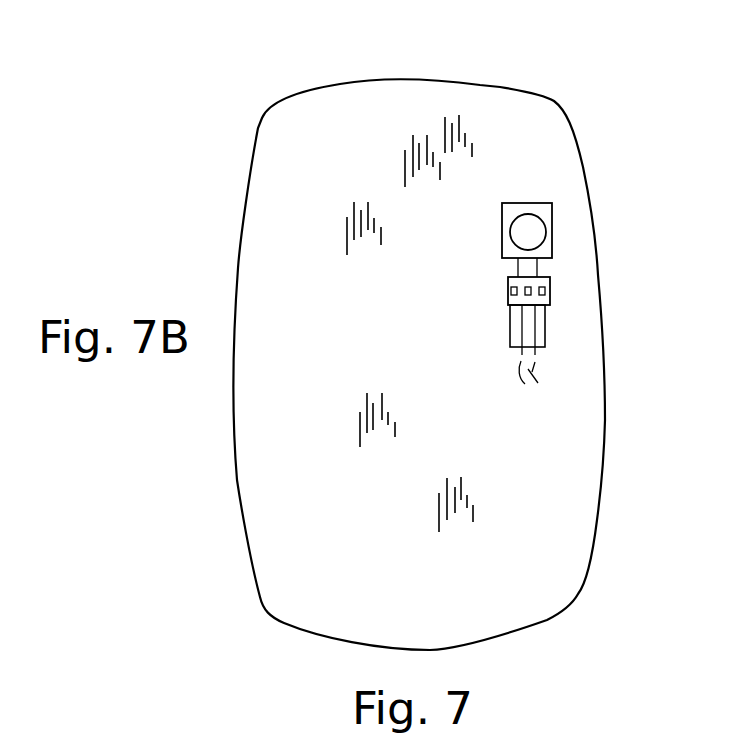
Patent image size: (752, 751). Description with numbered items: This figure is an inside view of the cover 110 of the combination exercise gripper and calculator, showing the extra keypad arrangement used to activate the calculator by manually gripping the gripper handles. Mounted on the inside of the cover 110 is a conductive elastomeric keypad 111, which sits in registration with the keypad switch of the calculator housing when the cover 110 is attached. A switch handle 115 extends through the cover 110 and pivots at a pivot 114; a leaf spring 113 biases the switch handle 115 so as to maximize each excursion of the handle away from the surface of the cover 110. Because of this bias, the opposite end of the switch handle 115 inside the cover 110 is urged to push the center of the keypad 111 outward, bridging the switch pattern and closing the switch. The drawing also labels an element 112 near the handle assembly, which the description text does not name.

The pad body 110 is at (497, 86).
The sensor unit 111 is at (545, 208).
The connector 114 is at (553, 290).
The plug 113 is at (528, 323).
The plug contacts 112 is at (547, 342).
The cable 115 is at (533, 370).